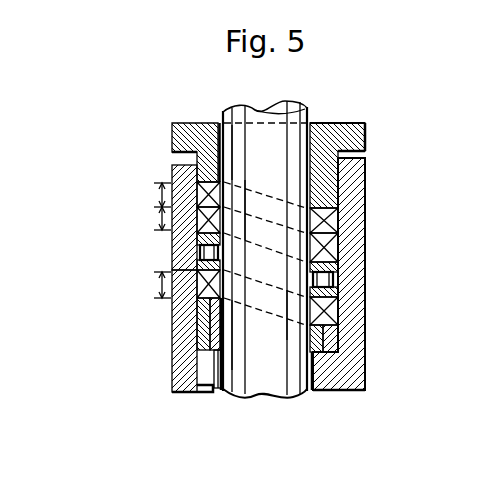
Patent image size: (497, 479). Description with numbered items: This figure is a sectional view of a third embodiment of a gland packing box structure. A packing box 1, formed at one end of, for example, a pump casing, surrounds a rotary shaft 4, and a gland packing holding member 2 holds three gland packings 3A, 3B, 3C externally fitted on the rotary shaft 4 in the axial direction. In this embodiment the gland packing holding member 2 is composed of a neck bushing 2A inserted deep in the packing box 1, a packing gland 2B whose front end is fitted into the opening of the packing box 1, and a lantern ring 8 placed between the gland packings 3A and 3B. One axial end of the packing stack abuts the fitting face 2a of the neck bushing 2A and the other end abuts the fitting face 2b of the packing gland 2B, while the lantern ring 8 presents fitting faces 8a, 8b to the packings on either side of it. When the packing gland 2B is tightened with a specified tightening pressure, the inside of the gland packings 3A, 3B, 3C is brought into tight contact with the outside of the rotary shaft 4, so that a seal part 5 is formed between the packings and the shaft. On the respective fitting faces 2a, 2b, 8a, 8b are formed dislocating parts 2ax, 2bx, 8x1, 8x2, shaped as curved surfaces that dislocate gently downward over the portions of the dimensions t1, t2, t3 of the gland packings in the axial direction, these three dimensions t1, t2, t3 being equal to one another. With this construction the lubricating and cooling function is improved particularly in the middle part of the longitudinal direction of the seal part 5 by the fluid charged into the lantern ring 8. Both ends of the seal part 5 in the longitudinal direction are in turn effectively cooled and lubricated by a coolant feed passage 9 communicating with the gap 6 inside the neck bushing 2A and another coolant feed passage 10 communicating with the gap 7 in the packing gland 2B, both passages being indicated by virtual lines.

The packing box 1 is at (352, 288).
The gland packing holding member 2 is at (128, 257).
The neck bushing 2A is at (190, 338).
The packing gland 2B is at (172, 137).
The fitting face of neck bushing 2a is at (257, 305).
The fitting face of packing gland 2b is at (261, 190).
The dislocating part 2ax is at (345, 373).
The dislocating part 2bx is at (340, 205).
The gland packing 3A is at (340, 343).
The gland packing 3B is at (330, 250).
The gland packing 3C is at (330, 224).
The rotary shaft 4 is at (300, 390).
The seal part 5 is at (340, 217).
The gap 6 is at (222, 388).
The gap 7 is at (217, 123).
The lantern ring 8 is at (200, 263).
The fitting face of lantern ring 8a is at (275, 292).
The fitting face of lantern ring 8b is at (266, 243).
The dislocating part 8x1 is at (335, 338).
The dislocating part 8x2 is at (338, 279).
The coolant feed passage 9 is at (205, 340).
The coolant feed passage 10 is at (340, 124).
The dimension t1 is at (160, 288).
The dimension t2 is at (160, 222).
The dimension t3 is at (160, 195).